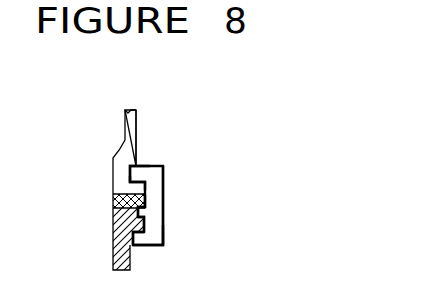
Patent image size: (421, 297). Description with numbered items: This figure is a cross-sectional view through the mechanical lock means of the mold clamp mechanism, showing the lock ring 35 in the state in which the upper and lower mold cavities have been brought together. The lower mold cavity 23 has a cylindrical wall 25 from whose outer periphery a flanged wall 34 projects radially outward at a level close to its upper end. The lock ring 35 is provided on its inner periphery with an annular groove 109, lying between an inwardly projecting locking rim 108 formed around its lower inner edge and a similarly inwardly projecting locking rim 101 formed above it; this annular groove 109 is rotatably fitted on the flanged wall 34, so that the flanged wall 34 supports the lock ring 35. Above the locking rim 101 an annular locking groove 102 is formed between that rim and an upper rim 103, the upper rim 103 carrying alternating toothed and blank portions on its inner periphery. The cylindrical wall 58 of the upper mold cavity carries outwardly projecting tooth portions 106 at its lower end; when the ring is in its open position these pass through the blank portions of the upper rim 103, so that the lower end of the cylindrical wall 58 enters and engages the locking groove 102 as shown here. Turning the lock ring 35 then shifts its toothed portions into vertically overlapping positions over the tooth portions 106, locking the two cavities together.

The lower mold cavity 23 is at (108, 257).
The cylindrical wall 25 is at (116, 216).
The cylindrical wall 58 is at (139, 116).
The lock ring 35 is at (168, 170).
The upper rim 103 is at (137, 167).
The tooth portions 106 is at (129, 188).
The annular locking groove 102 is at (167, 189).
The locking rim 101 is at (147, 210).
The flanged wall 34 is at (142, 221).
The annular groove 109 is at (146, 229).
The locking rim 108 is at (148, 240).